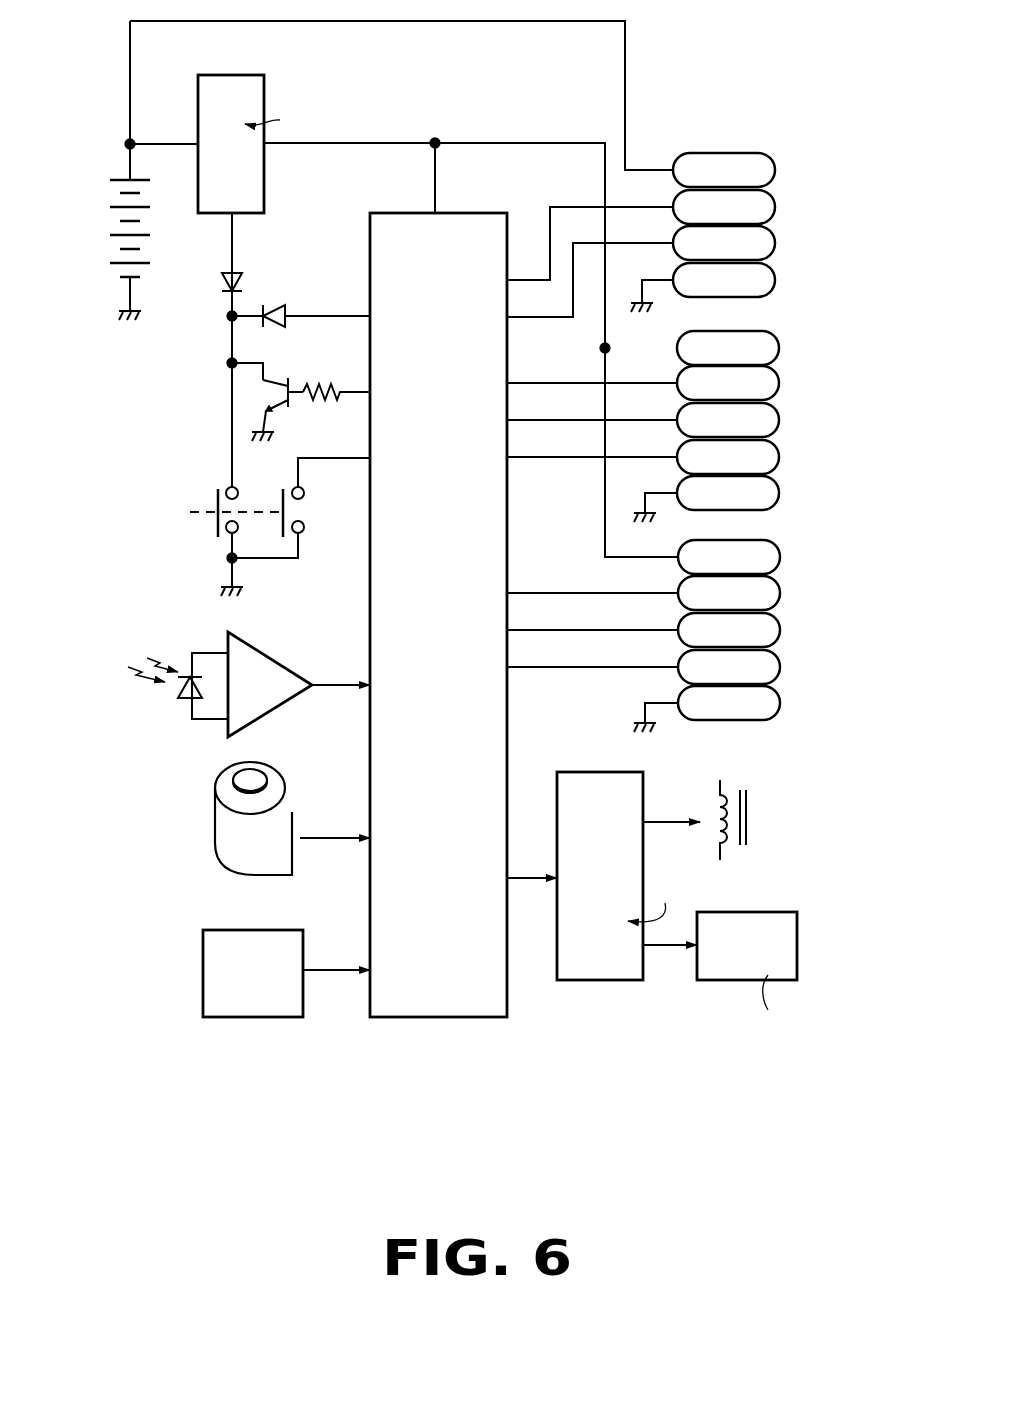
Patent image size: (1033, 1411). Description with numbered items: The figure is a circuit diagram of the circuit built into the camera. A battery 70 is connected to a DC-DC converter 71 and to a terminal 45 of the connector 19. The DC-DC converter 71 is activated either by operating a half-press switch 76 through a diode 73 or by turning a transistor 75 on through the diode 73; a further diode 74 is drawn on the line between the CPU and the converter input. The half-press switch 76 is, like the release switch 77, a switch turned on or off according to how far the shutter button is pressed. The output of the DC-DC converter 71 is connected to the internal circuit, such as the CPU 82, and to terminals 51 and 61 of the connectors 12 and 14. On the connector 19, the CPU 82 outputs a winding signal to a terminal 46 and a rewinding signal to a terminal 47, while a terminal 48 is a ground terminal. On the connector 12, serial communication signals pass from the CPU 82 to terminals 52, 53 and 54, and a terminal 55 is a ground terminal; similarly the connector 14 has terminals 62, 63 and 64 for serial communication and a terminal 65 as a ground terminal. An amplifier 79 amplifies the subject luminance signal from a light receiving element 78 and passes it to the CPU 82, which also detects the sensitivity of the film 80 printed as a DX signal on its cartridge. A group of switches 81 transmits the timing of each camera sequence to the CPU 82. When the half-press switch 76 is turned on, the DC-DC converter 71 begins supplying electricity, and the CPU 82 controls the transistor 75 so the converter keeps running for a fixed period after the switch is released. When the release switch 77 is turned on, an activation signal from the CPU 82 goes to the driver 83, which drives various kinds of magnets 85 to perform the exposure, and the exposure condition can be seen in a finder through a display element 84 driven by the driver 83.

The battery 70 is at (115, 252).
The DC-DC converter 71 is at (266, 88).
The diode 73 is at (244, 277).
The diode 74 is at (286, 305).
The transistor 75 is at (262, 390).
The half-press switch 76 is at (212, 504).
The release switch 77 is at (305, 510).
The light receiving element 78 is at (175, 696).
The amplifier 79 is at (270, 690).
The film 80 is at (228, 840).
The group of switches 81 is at (238, 1020).
The CPU 82 is at (430, 1003).
The driver 83 is at (602, 983).
The display element 84 is at (746, 983).
The magnets 85 is at (750, 825).
The connector 19 is at (690, 235).
The connector 12 is at (694, 426).
The connector 14 is at (692, 636).
The terminal 45 is at (724, 170).
The terminal 46 is at (641, 235).
The terminal 47 is at (641, 271).
The ground terminal 48 is at (703, 287).
The terminal 51 is at (728, 348).
The terminal 52 is at (643, 383).
The terminal 53 is at (643, 420).
The terminal 54 is at (643, 457).
The ground terminal 55 is at (706, 499).
The terminal 61 is at (729, 557).
The terminal 62 is at (643, 593).
The terminal 63 is at (643, 630).
The terminal 64 is at (643, 667).
The ground terminal 65 is at (707, 709).